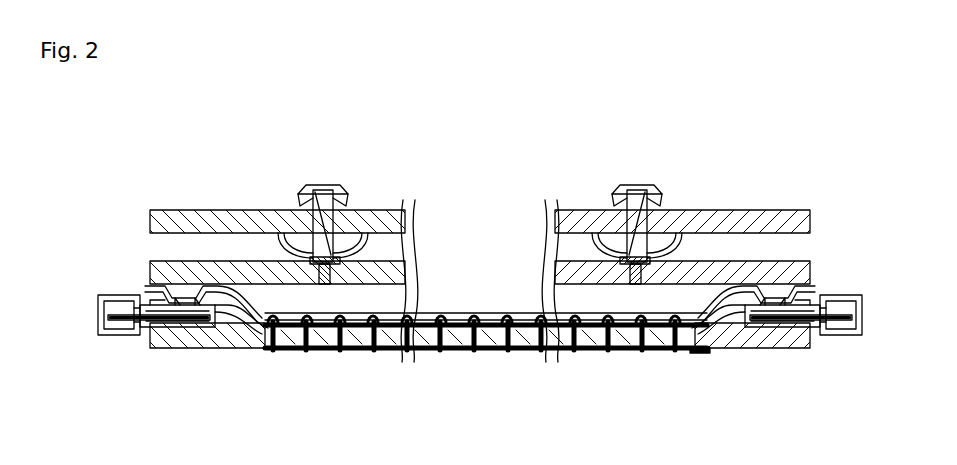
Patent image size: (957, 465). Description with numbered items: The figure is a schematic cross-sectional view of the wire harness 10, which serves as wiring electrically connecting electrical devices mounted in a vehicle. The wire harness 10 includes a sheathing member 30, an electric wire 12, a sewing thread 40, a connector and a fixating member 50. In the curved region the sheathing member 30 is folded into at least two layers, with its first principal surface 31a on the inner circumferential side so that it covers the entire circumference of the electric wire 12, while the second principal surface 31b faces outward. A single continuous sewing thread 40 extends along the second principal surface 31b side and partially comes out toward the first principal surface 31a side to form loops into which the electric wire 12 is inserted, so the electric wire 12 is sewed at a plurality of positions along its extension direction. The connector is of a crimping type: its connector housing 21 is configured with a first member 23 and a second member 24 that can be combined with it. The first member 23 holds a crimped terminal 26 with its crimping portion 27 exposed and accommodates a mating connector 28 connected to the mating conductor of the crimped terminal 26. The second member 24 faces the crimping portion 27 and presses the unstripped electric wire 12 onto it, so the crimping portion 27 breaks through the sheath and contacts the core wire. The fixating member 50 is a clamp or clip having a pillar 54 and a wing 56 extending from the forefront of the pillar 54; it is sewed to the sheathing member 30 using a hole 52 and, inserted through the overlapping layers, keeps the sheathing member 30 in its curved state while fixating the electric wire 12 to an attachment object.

The wire harness 10 is at (258, 112).
The electric wire 12 is at (262, 345).
The connector housing 21 is at (152, 234).
The first member 23 is at (113, 294).
The second member 24 is at (144, 288).
The crimped terminal 26 is at (187, 395).
The crimping portion 27 is at (181, 326).
The mating connector 28 is at (124, 334).
The sheathing member 30 is at (218, 345).
The first principal surface 31a is at (737, 327).
The second principal surface 31b is at (717, 352).
The sewing thread 40 is at (325, 352).
The fixating member 50 is at (322, 183).
The hole 52 is at (337, 264).
The pillar 54 is at (328, 196).
The wing 56 is at (345, 197).